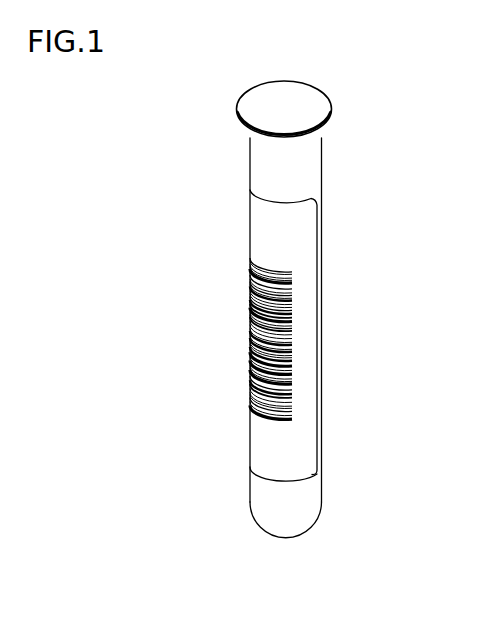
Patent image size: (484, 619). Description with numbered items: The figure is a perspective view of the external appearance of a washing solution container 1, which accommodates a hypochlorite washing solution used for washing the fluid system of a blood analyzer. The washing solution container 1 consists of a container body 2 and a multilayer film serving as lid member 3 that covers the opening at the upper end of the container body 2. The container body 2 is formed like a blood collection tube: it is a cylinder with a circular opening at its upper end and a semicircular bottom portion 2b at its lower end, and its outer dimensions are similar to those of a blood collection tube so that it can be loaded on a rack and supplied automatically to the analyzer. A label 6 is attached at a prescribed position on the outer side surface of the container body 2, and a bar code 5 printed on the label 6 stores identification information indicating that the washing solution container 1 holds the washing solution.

The washing solution container 1 is at (333, 74).
The container body 2 is at (303, 173).
The semicircular bottom portion 2b is at (298, 537).
The multilayer film (lid member) 3 is at (258, 109).
The bar code 5 is at (304, 293).
The label 6 is at (303, 226).